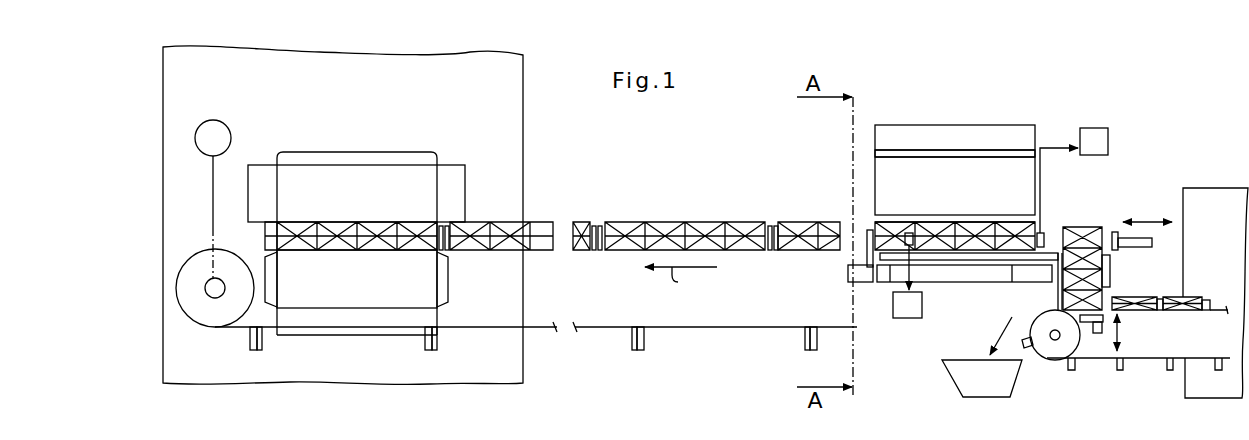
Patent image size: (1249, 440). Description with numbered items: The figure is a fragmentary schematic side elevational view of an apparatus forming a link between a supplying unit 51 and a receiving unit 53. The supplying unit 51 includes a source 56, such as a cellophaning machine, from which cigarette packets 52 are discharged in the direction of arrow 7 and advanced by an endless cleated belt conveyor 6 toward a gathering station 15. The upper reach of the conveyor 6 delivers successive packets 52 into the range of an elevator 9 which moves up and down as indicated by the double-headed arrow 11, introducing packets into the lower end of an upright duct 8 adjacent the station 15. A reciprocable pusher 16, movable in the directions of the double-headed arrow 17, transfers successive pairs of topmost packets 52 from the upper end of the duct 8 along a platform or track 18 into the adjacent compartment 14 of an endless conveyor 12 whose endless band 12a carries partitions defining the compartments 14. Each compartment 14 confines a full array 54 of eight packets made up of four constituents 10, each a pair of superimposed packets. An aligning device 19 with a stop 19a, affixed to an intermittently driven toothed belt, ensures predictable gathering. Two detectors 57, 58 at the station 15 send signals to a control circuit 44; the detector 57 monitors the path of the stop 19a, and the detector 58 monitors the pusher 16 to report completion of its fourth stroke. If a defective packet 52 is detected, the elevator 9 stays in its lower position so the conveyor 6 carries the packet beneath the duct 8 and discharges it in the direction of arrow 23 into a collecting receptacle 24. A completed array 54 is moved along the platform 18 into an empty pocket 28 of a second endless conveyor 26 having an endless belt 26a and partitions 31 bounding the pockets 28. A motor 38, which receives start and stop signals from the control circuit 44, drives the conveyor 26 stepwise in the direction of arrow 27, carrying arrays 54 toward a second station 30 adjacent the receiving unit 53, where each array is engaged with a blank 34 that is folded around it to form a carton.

The cleated belt conveyor 6 is at (1137, 360).
The arrow 7 is at (1196, 287).
The upright tower or duct 8 is at (1060, 283).
The elevator 9 is at (1097, 345).
The constituents 10 is at (996, 224).
The double-headed arrow 11 is at (1123, 335).
The endless conveyor 12 is at (1042, 133).
The endless band 12a is at (955, 135).
The compartments 14 is at (1008, 223).
The gathering station 15 is at (880, 213).
The pusher 16 is at (1115, 232).
The double-headed arrow 17 is at (1143, 220).
The platform or track 18 is at (1057, 248).
The aligning device 19 is at (862, 225).
The stop 19a is at (870, 248).
The arrow 23 is at (1004, 326).
The collecting receptacle 24 is at (958, 391).
The second endless conveyor 26 is at (588, 218).
The endless belt 26a is at (600, 330).
The arrow 27 is at (681, 282).
The pockets 28 is at (697, 340).
The second station 30 is at (373, 213).
The partitions 31 is at (643, 350).
The blanks 34 is at (315, 183).
The motor 38 is at (213, 120).
The control circuit 44 is at (1000, 223).
The supplying unit 51 is at (1138, 180).
The cigarette packets 52 is at (1182, 298).
The receiving unit 53 is at (343, 89).
The arrays 54 is at (672, 220).
The source 56 is at (1207, 205).
The detector 57 is at (908, 230).
The detector 58 is at (1045, 240).